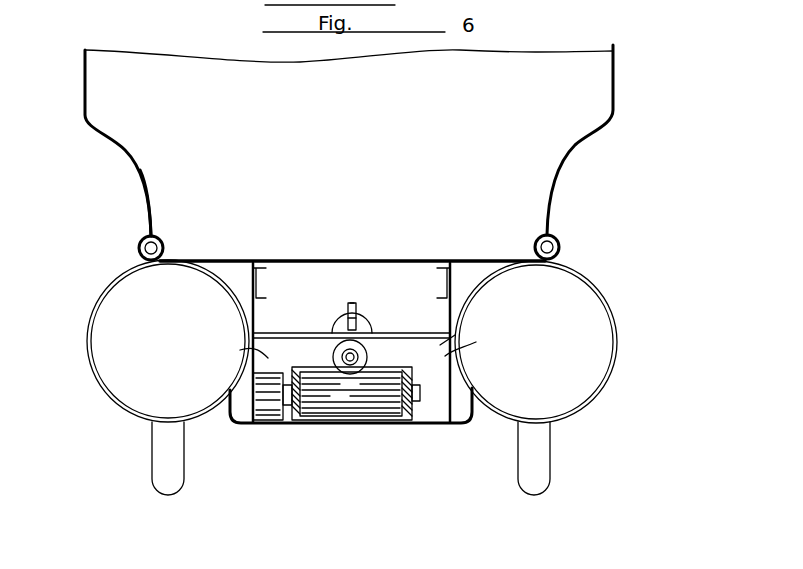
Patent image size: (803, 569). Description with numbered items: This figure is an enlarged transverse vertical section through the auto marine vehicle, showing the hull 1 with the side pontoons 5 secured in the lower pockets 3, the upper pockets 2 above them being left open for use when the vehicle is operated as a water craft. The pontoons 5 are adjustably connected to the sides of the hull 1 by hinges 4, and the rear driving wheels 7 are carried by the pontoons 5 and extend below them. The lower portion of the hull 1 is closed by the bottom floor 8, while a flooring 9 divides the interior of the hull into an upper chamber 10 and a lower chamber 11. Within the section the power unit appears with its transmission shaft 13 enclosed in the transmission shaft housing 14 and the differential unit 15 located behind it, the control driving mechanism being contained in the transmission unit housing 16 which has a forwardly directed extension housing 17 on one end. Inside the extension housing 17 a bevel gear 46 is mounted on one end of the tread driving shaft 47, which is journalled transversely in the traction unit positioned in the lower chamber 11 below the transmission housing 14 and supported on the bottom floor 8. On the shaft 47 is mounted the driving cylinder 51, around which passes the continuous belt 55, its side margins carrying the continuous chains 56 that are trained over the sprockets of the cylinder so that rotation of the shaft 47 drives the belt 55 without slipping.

The hull 1 is at (85, 100).
The upper pockets 2 is at (125, 150).
The upper chamber 10 is at (156, 180).
The hinges 4 is at (139, 246).
The flooring 9 is at (390, 261).
The lower pockets 3 is at (226, 278).
The differential unit 15 is at (368, 320).
The transmission shaft 13 is at (340, 357).
The transmission shaft housing 14 is at (360, 357).
The transmission unit housing 16 is at (240, 350).
The lower chamber 11 is at (476, 342).
The bevel gear 46 is at (446, 342).
The side pontoons 5 is at (90, 360).
The driving cylinder 51 is at (380, 400).
The continuous belt 55 is at (328, 425).
The continuous chains 56 is at (298, 424).
The extension housing 17 is at (272, 406).
The tread driving shaft 47 is at (420, 395).
The bottom floor 8 is at (447, 426).
The rear driving wheels 7 is at (165, 452).